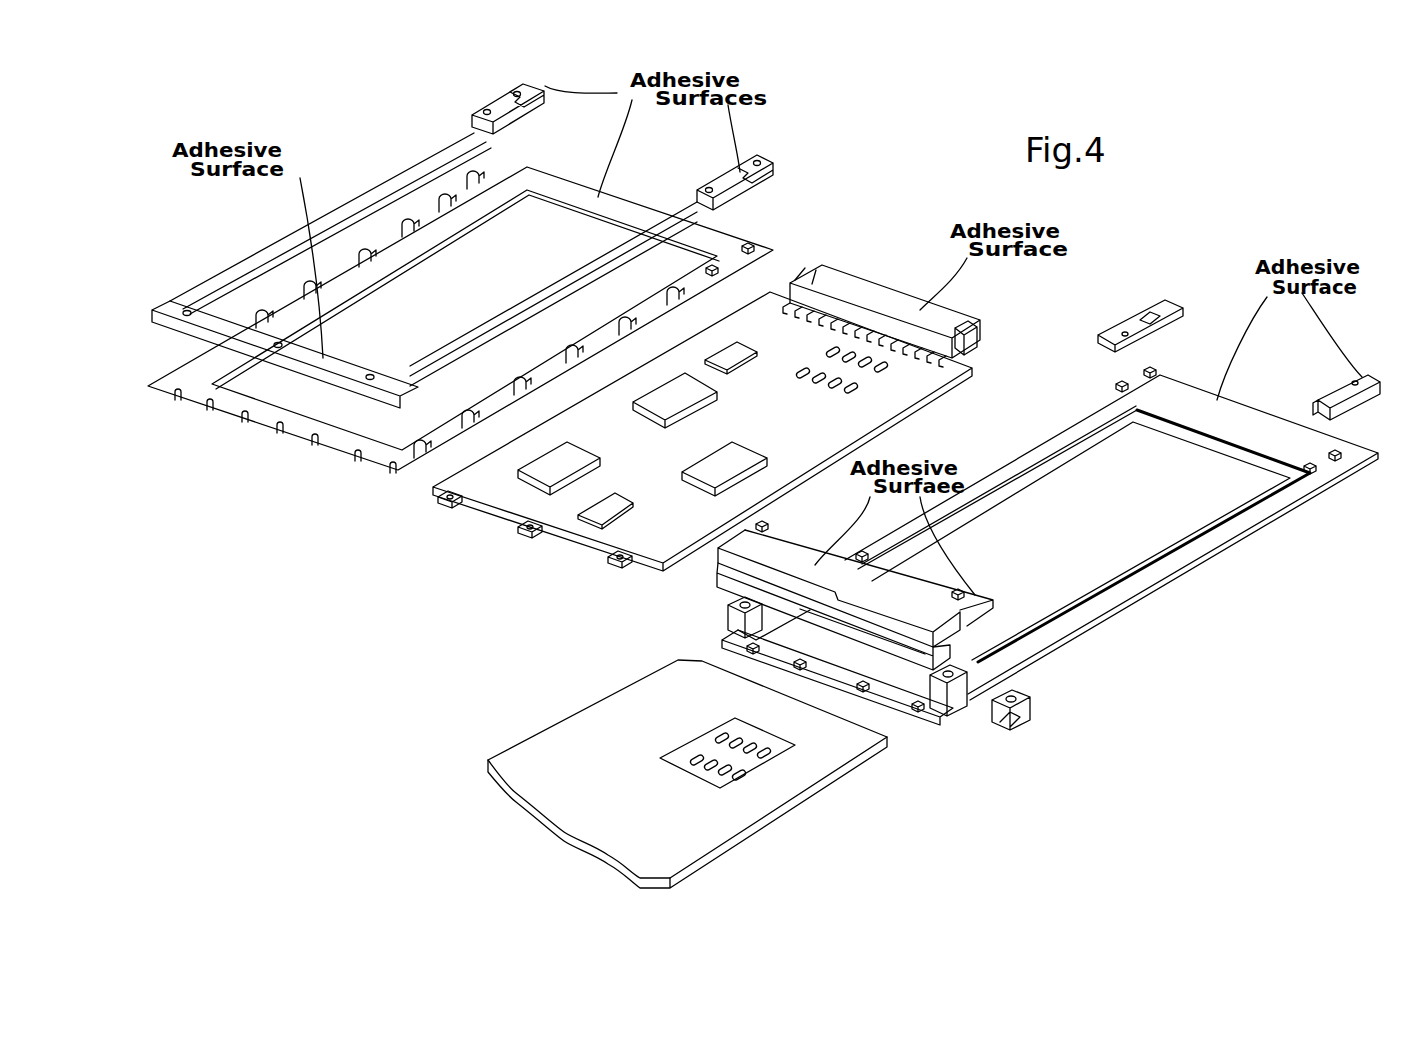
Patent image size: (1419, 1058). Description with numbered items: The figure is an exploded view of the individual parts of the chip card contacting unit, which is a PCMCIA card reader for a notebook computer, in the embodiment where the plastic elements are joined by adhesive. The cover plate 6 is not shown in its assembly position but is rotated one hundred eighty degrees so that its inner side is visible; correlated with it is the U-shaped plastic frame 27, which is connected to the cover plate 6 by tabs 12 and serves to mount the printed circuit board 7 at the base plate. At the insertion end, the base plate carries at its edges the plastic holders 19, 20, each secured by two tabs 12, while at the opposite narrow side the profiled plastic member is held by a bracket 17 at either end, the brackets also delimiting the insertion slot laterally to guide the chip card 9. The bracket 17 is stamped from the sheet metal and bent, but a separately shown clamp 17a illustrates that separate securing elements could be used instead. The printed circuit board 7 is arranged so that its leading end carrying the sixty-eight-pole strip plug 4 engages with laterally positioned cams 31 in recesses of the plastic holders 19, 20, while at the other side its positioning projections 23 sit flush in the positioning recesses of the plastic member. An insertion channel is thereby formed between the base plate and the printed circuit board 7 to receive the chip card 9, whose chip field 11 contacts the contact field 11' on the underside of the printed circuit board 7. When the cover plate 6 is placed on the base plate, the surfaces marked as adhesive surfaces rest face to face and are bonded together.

The strip plug 4 is at (883, 293).
The cover plate 6 is at (280, 388).
The printed circuit board 7 is at (572, 522).
The chip card 9 is at (745, 813).
The chip field 11 is at (769, 778).
The contact field 11' is at (895, 397).
The tabs 12 is at (360, 257).
The bracket 17 is at (952, 725).
The clamp 17a is at (1028, 732).
The plastic holder 19 is at (1178, 306).
The plastic holder 20 is at (1367, 377).
The positioning projections 23 is at (527, 540).
The U-shaped plastic frame 27 is at (262, 258).
The cams 31 is at (983, 337).